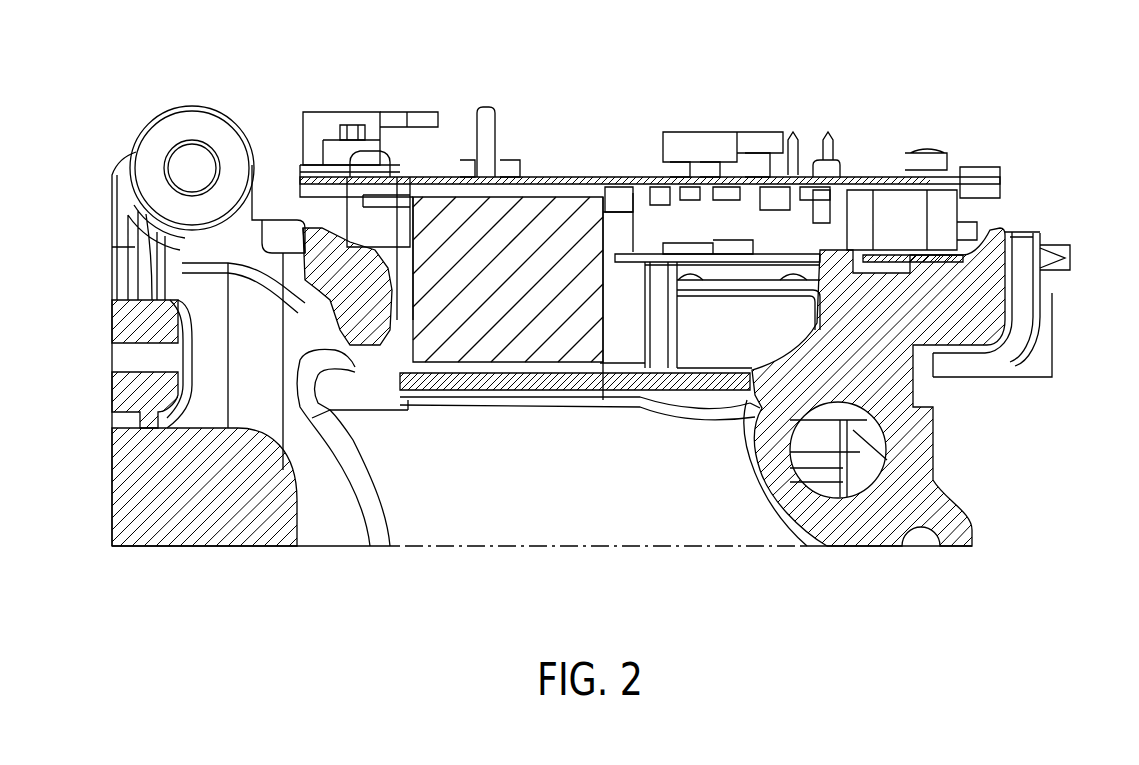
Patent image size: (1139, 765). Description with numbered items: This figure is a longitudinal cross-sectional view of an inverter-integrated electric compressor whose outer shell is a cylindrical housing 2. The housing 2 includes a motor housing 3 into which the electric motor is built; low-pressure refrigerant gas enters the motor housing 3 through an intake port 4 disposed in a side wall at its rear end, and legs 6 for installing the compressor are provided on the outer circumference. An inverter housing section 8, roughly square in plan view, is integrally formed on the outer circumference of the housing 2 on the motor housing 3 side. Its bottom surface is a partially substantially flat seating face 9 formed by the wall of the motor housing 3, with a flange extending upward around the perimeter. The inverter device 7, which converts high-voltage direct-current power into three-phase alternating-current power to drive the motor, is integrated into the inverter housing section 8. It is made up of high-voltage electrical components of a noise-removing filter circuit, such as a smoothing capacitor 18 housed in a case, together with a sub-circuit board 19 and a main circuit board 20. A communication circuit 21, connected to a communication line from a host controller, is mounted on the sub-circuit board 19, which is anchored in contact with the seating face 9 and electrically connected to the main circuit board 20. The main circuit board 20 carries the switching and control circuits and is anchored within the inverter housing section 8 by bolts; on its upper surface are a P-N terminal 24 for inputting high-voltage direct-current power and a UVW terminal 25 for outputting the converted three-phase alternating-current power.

The housing 2 is at (258, 548).
The motor housing 3 is at (605, 548).
The intake port 4 is at (823, 483).
The legs 6 is at (190, 135).
The inverter device 7 is at (838, 137).
The inverter housing section 8 is at (1010, 283).
The seating face 9 is at (637, 262).
The smoothing capacitor 18 is at (517, 230).
The sub-circuit board 19 is at (770, 254).
The main circuit board 20 is at (690, 177).
The communication circuit 21 is at (697, 241).
The P-N terminal 24 is at (486, 110).
The UVW terminal 25 is at (420, 135).